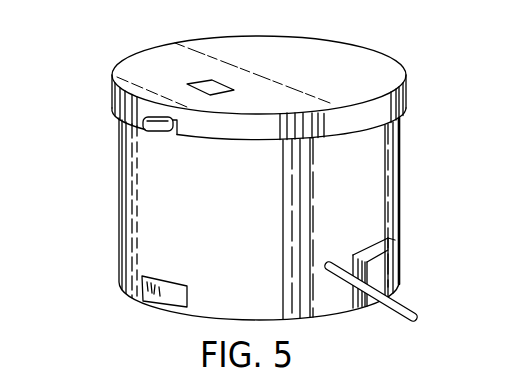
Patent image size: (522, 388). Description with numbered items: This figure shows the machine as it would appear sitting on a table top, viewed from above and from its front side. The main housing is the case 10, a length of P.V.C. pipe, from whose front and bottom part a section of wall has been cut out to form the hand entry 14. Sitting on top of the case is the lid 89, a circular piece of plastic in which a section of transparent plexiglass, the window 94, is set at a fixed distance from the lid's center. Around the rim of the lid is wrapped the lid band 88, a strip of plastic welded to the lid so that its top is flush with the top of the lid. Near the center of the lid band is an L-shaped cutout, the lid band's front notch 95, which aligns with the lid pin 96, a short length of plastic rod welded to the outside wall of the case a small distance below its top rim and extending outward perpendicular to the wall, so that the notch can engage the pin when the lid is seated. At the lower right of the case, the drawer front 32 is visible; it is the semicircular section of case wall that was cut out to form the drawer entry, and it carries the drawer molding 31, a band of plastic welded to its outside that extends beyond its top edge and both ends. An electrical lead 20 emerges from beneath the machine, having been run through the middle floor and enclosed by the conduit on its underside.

The case 10 is at (122, 206).
The hand entry 14 is at (133, 306).
The electrical lead 20 is at (403, 300).
The drawer molding 31 is at (397, 239).
The drawer front 32 is at (388, 269).
The lid band 88 is at (395, 98).
The lid 89 is at (354, 57).
The window 94 is at (198, 83).
The lid band's front notch 95 is at (170, 133).
The lid pin 96 is at (148, 125).